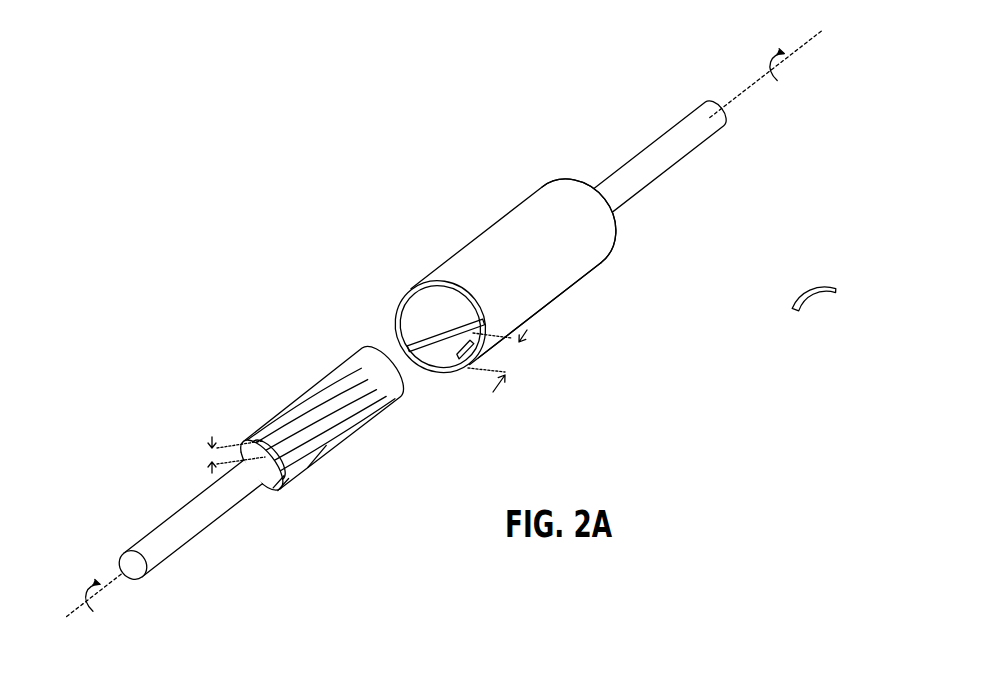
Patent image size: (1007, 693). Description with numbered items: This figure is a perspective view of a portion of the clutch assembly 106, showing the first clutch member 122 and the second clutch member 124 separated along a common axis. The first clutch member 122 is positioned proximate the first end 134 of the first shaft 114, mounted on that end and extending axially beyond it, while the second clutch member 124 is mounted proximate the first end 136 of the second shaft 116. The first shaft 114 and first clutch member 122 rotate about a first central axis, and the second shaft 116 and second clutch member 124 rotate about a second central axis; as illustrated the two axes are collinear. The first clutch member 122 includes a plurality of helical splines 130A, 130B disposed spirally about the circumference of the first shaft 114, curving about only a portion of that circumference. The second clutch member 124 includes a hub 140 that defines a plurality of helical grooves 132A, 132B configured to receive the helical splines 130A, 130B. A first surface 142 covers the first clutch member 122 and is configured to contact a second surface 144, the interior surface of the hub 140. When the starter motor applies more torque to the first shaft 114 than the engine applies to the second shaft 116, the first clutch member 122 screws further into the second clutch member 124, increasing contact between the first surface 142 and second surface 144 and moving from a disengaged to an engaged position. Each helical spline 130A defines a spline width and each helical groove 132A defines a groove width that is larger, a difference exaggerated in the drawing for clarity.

The clutch assembly 106 is at (447, 329).
The first shaft 114 is at (152, 528).
The second shaft 116 is at (681, 122).
The first clutch member 122 is at (250, 436).
The second clutch member 124 is at (483, 231).
The helical spline 130A is at (278, 427).
The helical spline 130B is at (300, 470).
The helical groove 132A is at (392, 327).
The helical groove 132B is at (419, 293).
The first end 134 is at (275, 493).
The first end 136 is at (597, 182).
The hub 140 is at (583, 278).
The first surface 142 is at (317, 457).
The second surface 144 is at (448, 372).